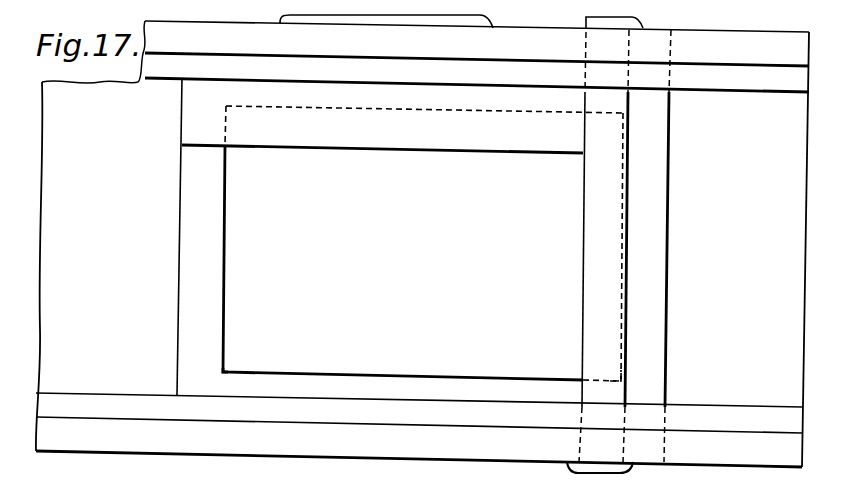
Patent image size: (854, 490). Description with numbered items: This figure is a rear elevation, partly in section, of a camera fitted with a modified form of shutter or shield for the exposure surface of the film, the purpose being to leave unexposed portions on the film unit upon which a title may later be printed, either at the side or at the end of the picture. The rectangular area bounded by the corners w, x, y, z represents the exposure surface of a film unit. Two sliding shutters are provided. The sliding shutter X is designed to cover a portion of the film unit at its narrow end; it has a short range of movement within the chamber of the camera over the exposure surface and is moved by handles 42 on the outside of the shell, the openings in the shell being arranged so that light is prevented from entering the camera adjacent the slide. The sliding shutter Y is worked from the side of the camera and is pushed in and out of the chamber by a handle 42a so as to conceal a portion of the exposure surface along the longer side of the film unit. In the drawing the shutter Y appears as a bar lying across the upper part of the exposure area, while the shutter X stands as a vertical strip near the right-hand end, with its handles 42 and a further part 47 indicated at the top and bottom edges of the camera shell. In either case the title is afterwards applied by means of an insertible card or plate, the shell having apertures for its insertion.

The handle 42a is at (486, 22).
The handles 42 is at (638, 22).
The strip section 47 is at (578, 470).
The sliding shutter X is at (590, 247).
The sliding shutter Y is at (407, 140).
The corner of exposure surface w is at (424, 125).
The corner of exposure surface x is at (612, 247).
The corner of exposure surface y is at (232, 371).
The corner of exposure surface z is at (611, 372).